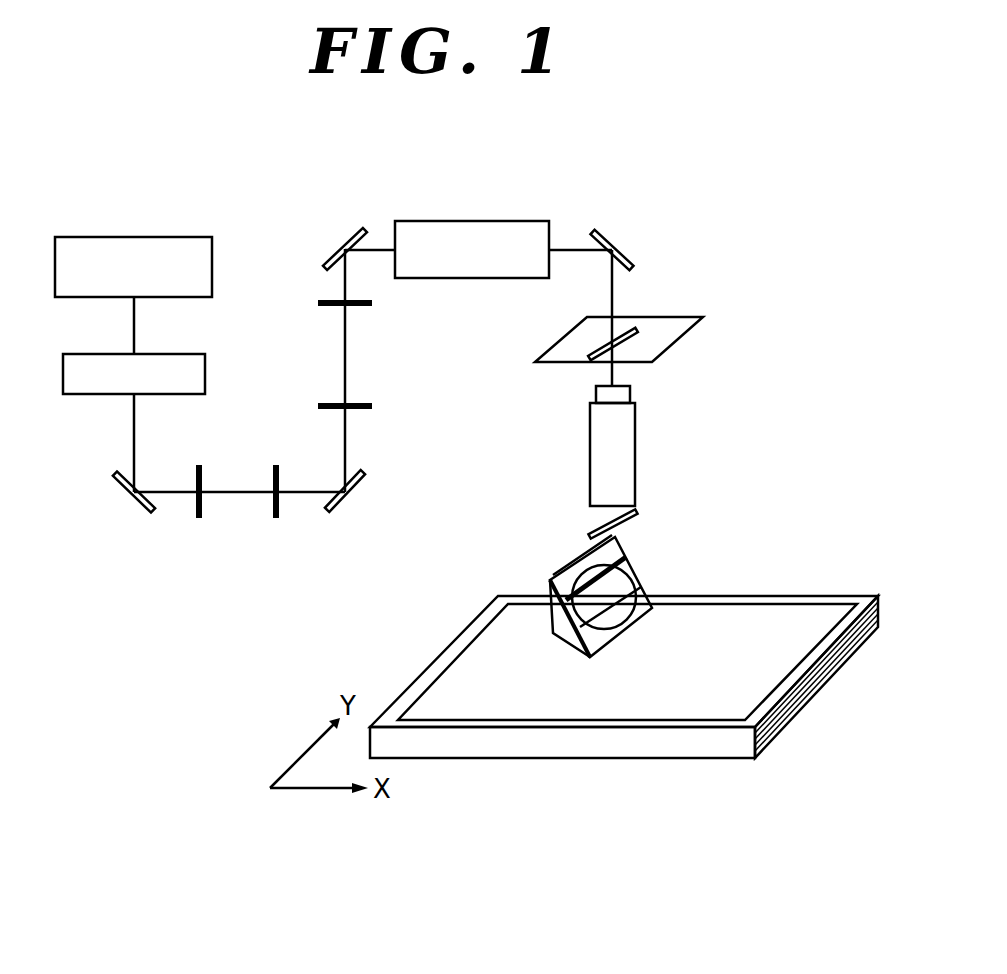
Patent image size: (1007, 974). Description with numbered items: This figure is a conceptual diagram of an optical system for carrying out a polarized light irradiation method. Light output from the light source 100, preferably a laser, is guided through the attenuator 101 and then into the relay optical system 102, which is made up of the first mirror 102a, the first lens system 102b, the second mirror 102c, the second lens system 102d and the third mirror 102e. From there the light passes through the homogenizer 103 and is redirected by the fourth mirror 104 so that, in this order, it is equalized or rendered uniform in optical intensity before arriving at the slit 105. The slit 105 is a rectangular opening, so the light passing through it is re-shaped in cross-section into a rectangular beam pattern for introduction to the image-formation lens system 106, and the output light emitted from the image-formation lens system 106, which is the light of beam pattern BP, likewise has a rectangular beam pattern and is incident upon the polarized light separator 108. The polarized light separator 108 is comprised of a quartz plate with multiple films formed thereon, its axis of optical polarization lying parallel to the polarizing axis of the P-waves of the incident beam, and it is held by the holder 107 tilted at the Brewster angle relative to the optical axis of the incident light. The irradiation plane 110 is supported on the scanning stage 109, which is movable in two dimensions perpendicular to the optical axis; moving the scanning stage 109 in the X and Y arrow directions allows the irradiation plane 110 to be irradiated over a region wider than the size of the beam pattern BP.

The light source 100 is at (130, 237).
The attenuator 101 is at (190, 354).
The relay optical system 102 is at (293, 450).
The first mirror 102a is at (135, 496).
The first lens system 102b is at (280, 540).
The second mirror 102c is at (349, 504).
The second lens system 102d is at (383, 305).
The third mirror 102e is at (337, 255).
The homogenizer 103 is at (500, 221).
The fourth mirror 104 is at (618, 238).
The slit 105 is at (682, 318).
The image-formation lens system 106 is at (637, 425).
The beam pattern BP is at (630, 520).
The holder 107 is at (562, 568).
The polarized light separator 108 is at (642, 572).
The scanning stage 109 is at (543, 760).
The irradiation plane 110 is at (490, 650).